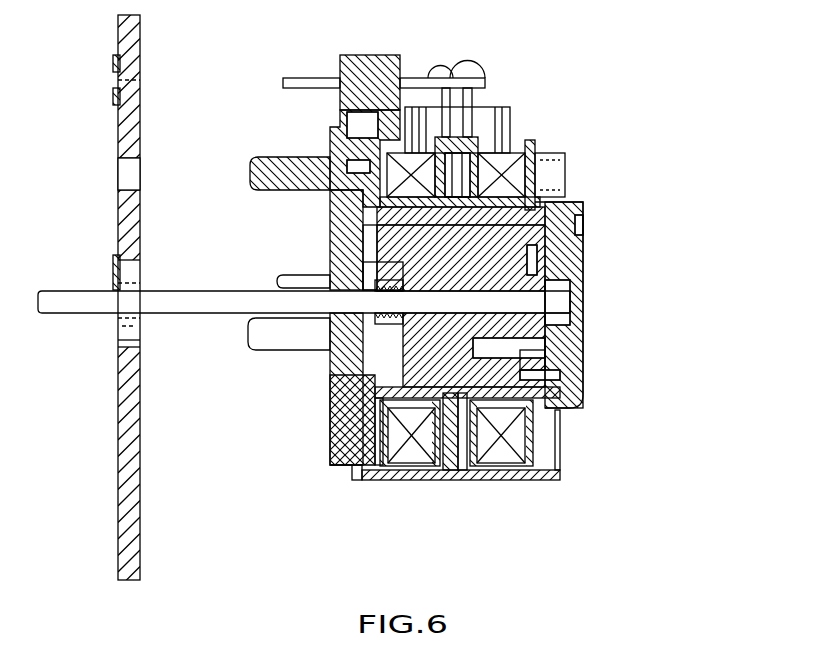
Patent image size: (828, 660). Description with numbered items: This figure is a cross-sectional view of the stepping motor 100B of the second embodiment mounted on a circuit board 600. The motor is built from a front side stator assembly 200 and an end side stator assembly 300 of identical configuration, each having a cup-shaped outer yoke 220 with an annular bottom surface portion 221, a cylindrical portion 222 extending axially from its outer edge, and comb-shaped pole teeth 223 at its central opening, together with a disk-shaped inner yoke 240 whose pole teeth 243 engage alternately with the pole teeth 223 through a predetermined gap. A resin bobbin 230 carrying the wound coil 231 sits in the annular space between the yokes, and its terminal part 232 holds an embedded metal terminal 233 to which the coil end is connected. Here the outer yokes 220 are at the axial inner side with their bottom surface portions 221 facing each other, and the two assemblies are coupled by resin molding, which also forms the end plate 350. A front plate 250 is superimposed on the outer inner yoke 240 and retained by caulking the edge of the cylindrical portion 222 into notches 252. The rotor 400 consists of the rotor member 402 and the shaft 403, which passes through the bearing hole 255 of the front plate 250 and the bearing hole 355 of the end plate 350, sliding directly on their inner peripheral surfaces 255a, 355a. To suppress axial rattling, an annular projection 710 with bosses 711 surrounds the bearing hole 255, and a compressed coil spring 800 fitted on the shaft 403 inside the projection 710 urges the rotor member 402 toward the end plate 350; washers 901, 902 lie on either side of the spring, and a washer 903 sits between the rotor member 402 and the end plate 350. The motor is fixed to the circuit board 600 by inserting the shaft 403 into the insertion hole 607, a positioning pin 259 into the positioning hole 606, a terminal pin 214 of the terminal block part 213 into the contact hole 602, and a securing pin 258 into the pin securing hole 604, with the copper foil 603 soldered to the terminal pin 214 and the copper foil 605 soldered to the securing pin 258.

The stepping motor 100B is at (592, 78).
The front side stator assembly 200 is at (400, 485).
The terminal block part 213 is at (340, 62).
The terminal pins 214 is at (288, 78).
The outer yoke 220 is at (400, 482).
The bottom surface portion 221 is at (448, 460).
The cylindrical portion 222 is at (440, 482).
The pole teeth 223 is at (495, 480).
The bobbin 230 is at (535, 160).
The coil 231 is at (412, 165).
The terminal part 232 is at (475, 135).
The terminal 233 is at (470, 95).
The inner yoke 240 is at (350, 165).
The pole teeth 243 is at (582, 224).
The front plate 250 is at (335, 225).
The notches 252 is at (380, 466).
The bearing hole 255 is at (378, 285).
The inner peripheral surface 255a is at (378, 322).
The securing pins 258 is at (280, 279).
The positioning pins 259 is at (265, 160).
The end side stator assembly 300 is at (525, 482).
The end plate 350 is at (565, 255).
The bearing hole 355 is at (568, 292).
The inner peripheral surface 355a is at (572, 313).
The rotor 400 is at (615, 365).
The rotor member 402 is at (562, 375).
The shaft 403 is at (546, 355).
The circuit board 600 is at (118, 432).
The contact hole 602 is at (142, 80).
The copper foil 603 is at (113, 62).
The pin securing hole 604 is at (115, 279).
The copper foil 605 is at (115, 262).
The positioning hole 606 is at (125, 176).
The insertion hole 607 is at (130, 330).
The projection 710 is at (355, 175).
The bosses 711 is at (355, 470).
The coil spring 800 is at (370, 272).
The washer 901 is at (352, 382).
The washer 902 is at (360, 415).
The washer 903 is at (540, 262).